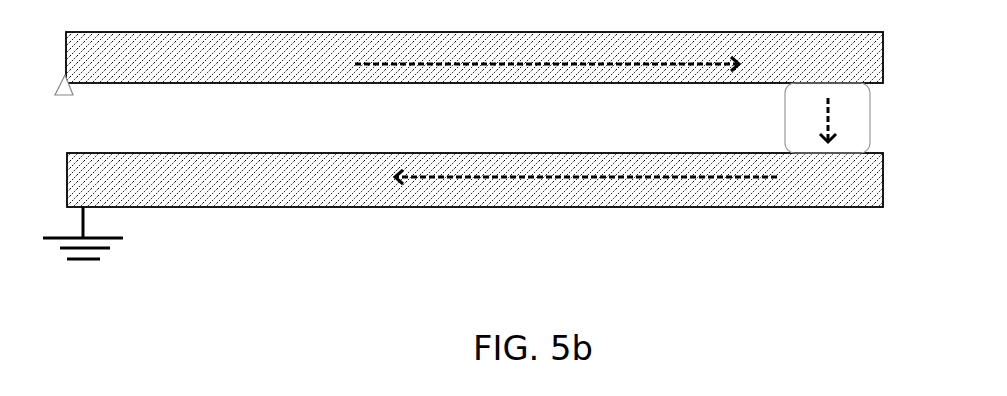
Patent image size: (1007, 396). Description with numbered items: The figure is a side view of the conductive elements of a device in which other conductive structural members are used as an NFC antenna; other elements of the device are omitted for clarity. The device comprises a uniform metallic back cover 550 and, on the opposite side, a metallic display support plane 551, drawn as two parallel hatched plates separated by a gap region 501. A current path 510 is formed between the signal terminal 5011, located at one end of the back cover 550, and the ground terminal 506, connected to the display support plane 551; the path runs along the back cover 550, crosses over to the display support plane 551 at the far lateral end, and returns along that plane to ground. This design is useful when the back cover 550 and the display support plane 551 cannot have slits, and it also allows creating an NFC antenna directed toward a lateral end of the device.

The uniform metallic back cover 550 is at (474, 57).
The metallic display support plane 551 is at (475, 180).
The gap / dielectric region 501 is at (474, 118).
The signal terminal 5011 is at (73, 92).
The current path 510 is at (745, 64).
The ground terminal 506 is at (103, 240).